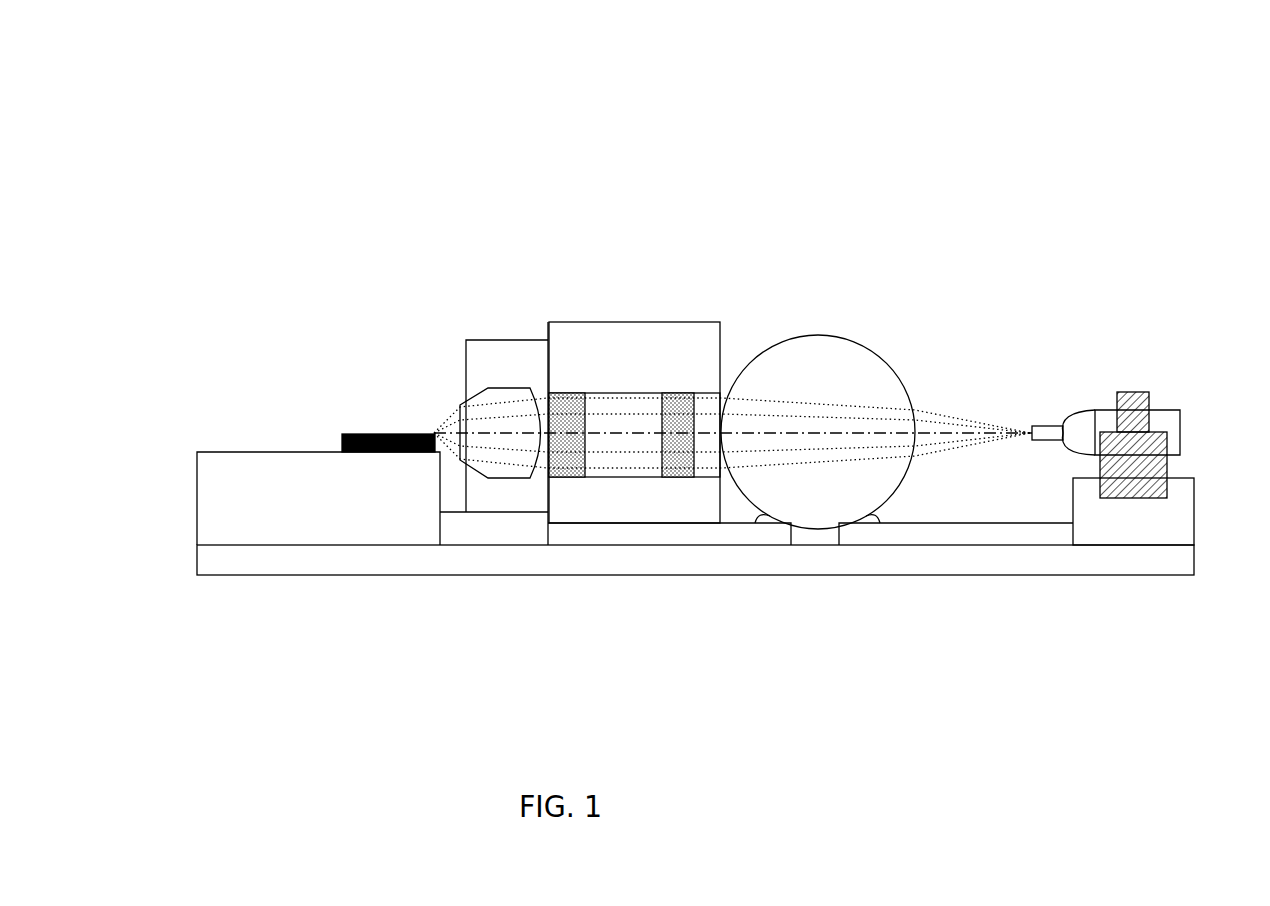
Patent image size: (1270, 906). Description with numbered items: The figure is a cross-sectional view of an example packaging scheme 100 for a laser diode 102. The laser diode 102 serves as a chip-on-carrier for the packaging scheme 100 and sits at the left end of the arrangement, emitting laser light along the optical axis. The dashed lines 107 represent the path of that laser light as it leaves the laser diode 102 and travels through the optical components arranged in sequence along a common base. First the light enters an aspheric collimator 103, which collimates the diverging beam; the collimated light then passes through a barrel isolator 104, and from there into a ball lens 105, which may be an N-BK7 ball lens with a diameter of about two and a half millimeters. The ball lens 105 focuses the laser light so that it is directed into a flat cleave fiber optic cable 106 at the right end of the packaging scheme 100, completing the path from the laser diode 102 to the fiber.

The packaging scheme 100 is at (252, 82).
The laser diode 102 is at (364, 432).
The aspheric collimator 103 is at (489, 339).
The barrel isolator 104 is at (621, 322).
The ball lens 105 is at (840, 340).
The flat cleave fiber optic cable 106 is at (1100, 410).
The dashed lines 107 is at (451, 400).